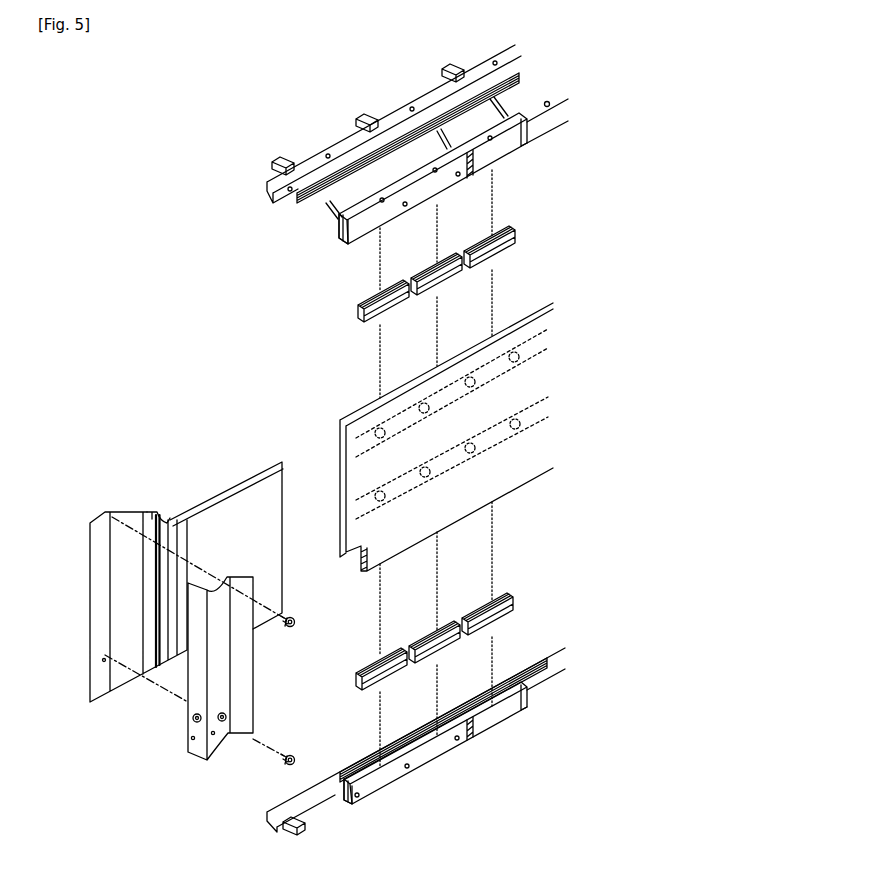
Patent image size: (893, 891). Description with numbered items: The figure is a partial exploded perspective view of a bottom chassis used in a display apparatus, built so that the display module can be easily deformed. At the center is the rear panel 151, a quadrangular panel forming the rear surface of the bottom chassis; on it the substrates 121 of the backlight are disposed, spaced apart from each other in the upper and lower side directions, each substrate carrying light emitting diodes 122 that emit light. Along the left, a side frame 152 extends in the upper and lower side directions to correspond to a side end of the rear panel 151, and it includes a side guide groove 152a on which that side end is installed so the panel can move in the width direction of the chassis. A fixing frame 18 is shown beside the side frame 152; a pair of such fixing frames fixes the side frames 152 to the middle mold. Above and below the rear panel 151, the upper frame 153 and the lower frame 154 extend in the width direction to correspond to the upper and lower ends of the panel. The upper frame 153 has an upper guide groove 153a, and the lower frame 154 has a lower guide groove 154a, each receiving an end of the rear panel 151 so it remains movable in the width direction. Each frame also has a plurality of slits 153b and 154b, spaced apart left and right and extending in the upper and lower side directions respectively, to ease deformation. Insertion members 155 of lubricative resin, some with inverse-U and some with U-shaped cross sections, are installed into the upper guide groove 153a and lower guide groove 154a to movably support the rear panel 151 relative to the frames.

The fixing frame 18 is at (203, 693).
The substrate 121 is at (450, 387).
The light emitting diode 122 is at (380, 423).
The rear panel 151 is at (349, 549).
The side frame 152 is at (97, 595).
The side guide groove 152a is at (168, 520).
The upper frame 153 is at (441, 184).
The upper guide groove 153a is at (343, 241).
The slit 153b is at (474, 176).
The lower frame 154 is at (384, 776).
The lower guide groove 154a is at (337, 800).
The slit 154b is at (478, 727).
The insertion member 155 is at (397, 293).